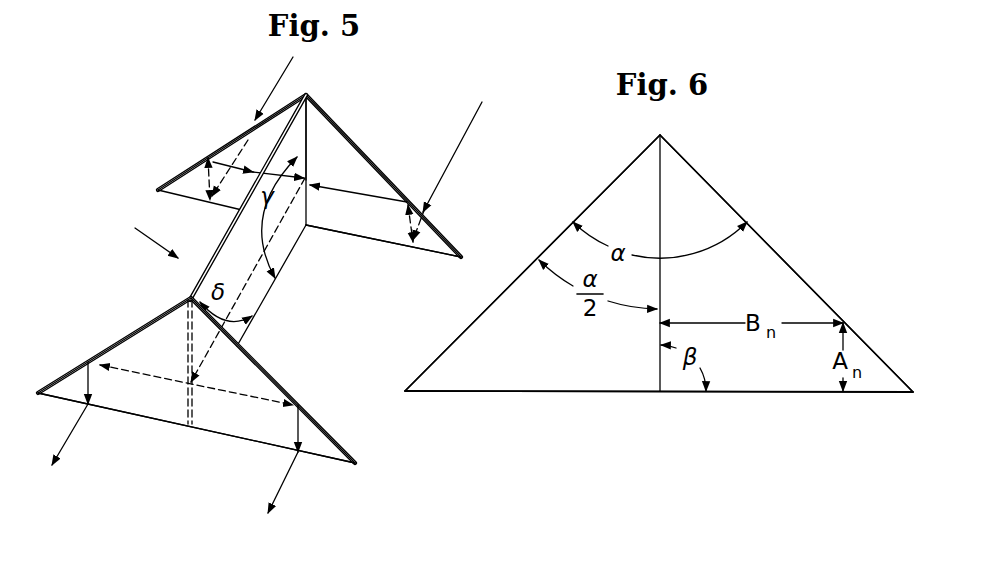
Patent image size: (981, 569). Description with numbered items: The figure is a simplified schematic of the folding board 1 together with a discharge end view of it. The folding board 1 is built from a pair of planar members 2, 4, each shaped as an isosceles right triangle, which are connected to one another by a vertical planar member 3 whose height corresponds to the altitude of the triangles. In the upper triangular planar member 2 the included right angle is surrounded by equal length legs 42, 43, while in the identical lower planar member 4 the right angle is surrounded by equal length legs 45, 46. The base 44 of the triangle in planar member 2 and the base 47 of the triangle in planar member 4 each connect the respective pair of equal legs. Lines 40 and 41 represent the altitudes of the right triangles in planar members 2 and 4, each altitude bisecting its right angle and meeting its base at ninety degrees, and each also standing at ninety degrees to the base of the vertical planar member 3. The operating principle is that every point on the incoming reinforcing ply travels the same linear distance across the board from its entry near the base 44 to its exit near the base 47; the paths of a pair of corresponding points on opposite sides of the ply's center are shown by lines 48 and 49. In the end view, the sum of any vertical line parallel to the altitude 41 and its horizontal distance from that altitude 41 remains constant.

In FIG. 5, the folding board 1 is at (148, 235).
In FIG. 5, the planar member 2 is at (372, 178).
In FIG. 5, the vertical planar member 3 is at (262, 293).
In FIG. 5, the planar member 4 is at (258, 383).
In FIG. 6, the planar member 4 is at (773, 263).
In FIG. 5, the altitude 40 is at (308, 137).
In FIG. 5, the altitude 41 is at (197, 403).
In FIG. 6, the altitude 41 is at (658, 362).
In FIG. 5, the leg 42 is at (355, 143).
In FIG. 5, the leg 43 is at (230, 142).
In FIG. 5, the base 44 is at (362, 242).
In FIG. 5, the leg 45 is at (312, 417).
In FIG. 6, the leg 45 is at (712, 186).
In FIG. 5, the leg 46 is at (67, 372).
In FIG. 6, the leg 46 is at (605, 188).
In FIG. 5, the base 47 is at (325, 465).
In FIG. 6, the base 47 is at (532, 393).
In FIG. 5, the line 48 is at (467, 137).
In FIG. 5, the line 49 is at (275, 92).